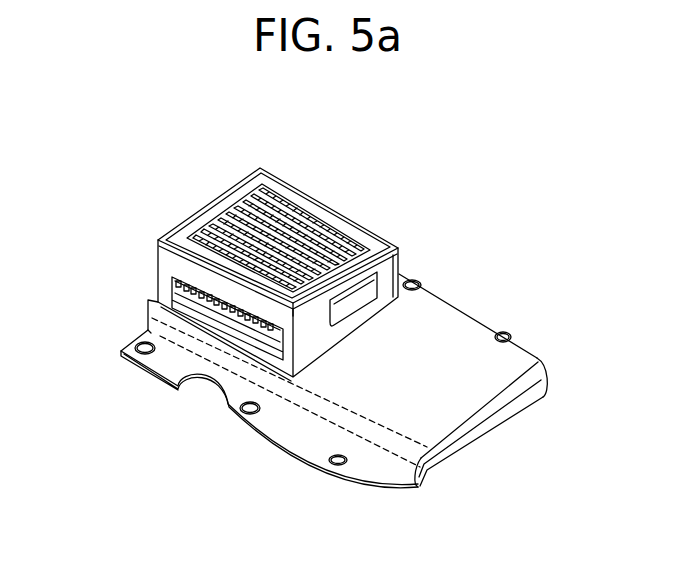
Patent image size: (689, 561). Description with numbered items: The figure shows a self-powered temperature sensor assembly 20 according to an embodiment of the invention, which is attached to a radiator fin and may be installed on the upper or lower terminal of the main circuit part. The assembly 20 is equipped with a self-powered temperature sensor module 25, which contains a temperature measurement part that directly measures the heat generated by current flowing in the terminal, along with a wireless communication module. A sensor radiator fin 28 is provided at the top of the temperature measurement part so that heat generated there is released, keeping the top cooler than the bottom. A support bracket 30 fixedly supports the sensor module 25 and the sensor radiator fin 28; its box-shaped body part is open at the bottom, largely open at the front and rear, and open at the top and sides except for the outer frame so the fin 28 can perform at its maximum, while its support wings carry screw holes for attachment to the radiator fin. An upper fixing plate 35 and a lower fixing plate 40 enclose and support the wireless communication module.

The self-powered temperature sensor assembly 20 is at (576, 148).
The self-powered temperature sensor module 25 is at (203, 308).
The sensor radiator fin 28 is at (337, 237).
The support bracket 30 is at (300, 190).
The upper fixing plate 35 is at (430, 345).
The lower fixing plate 40 is at (473, 443).